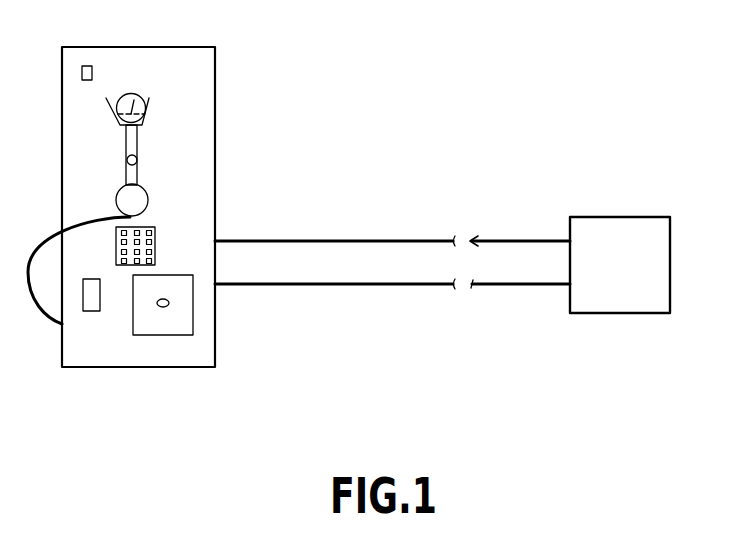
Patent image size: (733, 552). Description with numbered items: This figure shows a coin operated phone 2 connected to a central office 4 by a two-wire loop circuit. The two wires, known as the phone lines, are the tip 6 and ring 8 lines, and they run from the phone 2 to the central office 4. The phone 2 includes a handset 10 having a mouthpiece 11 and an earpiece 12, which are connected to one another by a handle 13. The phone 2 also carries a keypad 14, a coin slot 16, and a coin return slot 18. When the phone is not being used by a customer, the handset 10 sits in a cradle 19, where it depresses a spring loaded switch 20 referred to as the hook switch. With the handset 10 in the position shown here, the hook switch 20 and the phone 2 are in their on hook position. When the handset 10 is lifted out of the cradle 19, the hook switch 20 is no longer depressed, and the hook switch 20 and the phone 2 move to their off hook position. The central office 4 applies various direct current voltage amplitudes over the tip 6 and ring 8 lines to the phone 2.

The coin operated phone 2 is at (213, 47).
The central office 4 is at (627, 217).
The tip line 6 is at (378, 241).
The ring line 8 is at (382, 284).
The handset 10 is at (118, 158).
The mouthpiece 11 is at (118, 200).
The earpiece 12 is at (124, 94).
The handle 13 is at (126, 134).
The keypad 14 is at (155, 241).
The coin slot 16 is at (82, 73).
The coin return slot 18 is at (86, 311).
The cradle 19 is at (108, 100).
The hook switch 20 is at (134, 100).